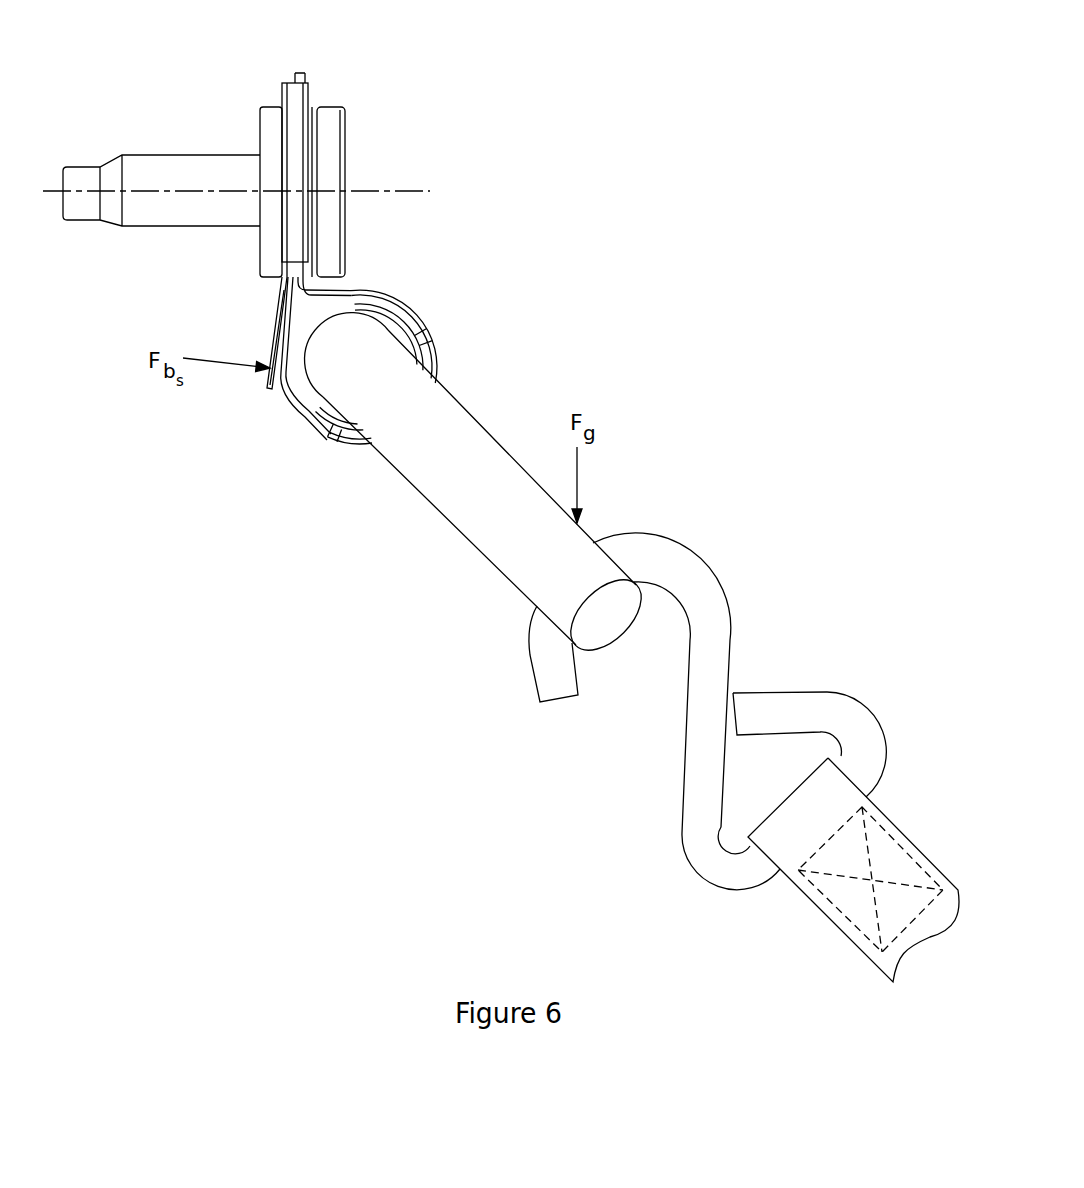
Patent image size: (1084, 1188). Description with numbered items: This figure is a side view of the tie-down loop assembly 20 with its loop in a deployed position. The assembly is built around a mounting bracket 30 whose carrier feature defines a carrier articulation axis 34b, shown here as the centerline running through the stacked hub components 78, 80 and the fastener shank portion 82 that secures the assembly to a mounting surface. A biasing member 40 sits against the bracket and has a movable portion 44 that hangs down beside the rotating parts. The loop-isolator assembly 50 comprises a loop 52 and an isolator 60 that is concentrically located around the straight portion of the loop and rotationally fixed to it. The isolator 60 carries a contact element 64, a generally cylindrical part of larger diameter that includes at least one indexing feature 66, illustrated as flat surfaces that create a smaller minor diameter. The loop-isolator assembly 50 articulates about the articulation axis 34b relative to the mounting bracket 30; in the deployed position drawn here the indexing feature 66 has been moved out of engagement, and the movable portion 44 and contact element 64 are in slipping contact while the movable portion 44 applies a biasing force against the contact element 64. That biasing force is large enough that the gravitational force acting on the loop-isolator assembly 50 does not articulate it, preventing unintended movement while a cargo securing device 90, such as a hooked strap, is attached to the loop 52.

The tie-down loop assembly 20 is at (303, 72).
The mounting bracket 30 is at (393, 297).
The carrier articulation axis 34b is at (413, 192).
The biasing member 40 is at (273, 317).
The movable portion 44 is at (272, 360).
The loop-isolator assembly 50 is at (473, 412).
The loop 52 is at (442, 513).
The isolator 60 is at (355, 277).
The contact element 64 is at (347, 283).
The indexing feature 66 is at (427, 330).
The left disc 78 is at (260, 98).
The right disc 80 is at (338, 100).
The fastener shank portion 82 is at (148, 155).
The cargo securing device 90 is at (690, 553).